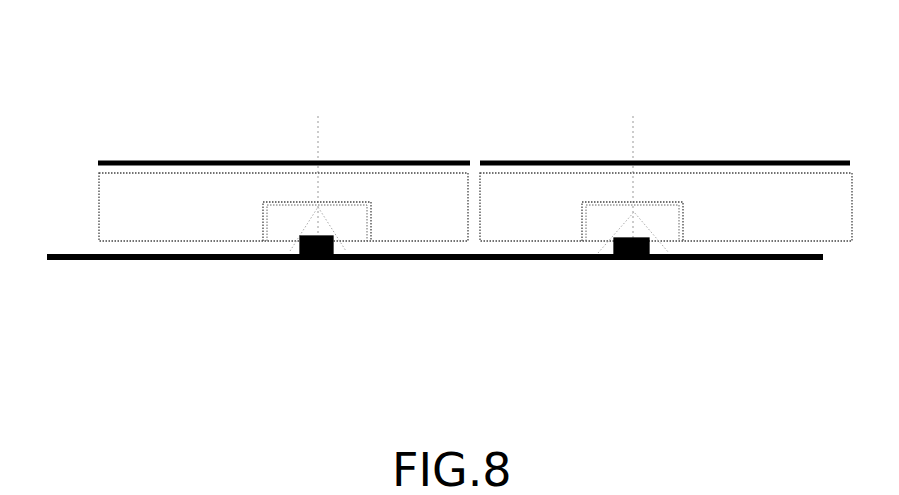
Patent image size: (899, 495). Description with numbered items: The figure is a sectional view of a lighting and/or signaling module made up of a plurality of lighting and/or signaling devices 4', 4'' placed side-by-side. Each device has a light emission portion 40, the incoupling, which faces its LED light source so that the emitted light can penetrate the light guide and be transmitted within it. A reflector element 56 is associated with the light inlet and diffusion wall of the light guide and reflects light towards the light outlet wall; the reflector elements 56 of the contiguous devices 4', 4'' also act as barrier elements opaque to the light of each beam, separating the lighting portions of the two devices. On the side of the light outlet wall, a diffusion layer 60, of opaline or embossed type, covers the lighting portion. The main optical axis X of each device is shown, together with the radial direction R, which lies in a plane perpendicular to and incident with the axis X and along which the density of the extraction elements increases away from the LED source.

The diffusion layer 60 is at (213, 161).
The reflector element 56 is at (722, 253).
The light emission portion 40 is at (321, 230).
The lighting and/or signaling device 4'' is at (245, 284).
The lighting and/or signaling device 4' is at (666, 285).
The radial direction R is at (346, 116).
The main optical axis X is at (317, 277).